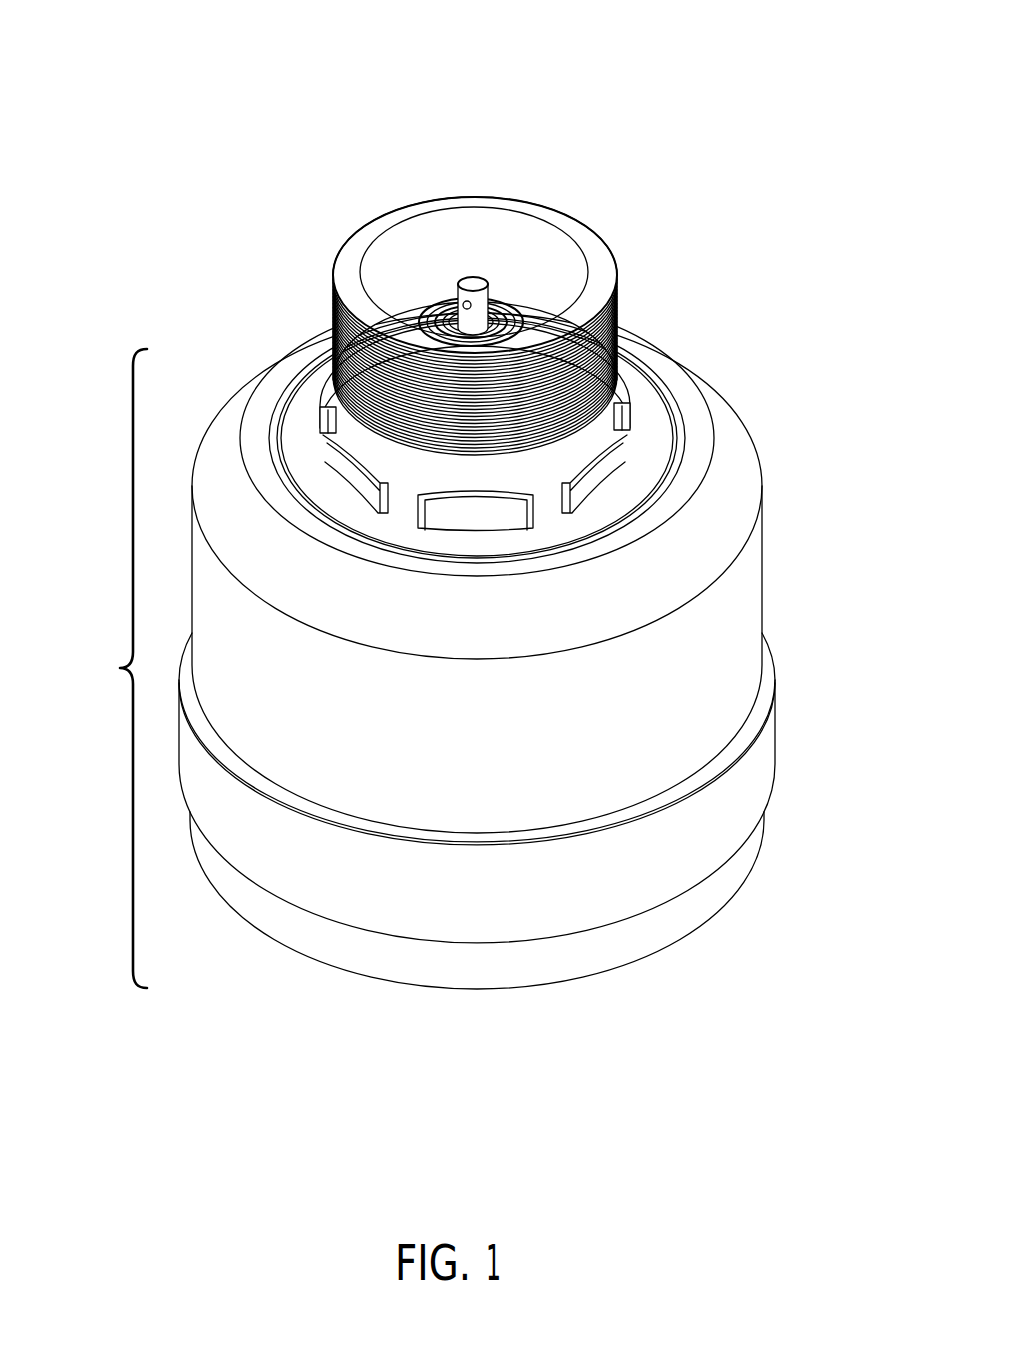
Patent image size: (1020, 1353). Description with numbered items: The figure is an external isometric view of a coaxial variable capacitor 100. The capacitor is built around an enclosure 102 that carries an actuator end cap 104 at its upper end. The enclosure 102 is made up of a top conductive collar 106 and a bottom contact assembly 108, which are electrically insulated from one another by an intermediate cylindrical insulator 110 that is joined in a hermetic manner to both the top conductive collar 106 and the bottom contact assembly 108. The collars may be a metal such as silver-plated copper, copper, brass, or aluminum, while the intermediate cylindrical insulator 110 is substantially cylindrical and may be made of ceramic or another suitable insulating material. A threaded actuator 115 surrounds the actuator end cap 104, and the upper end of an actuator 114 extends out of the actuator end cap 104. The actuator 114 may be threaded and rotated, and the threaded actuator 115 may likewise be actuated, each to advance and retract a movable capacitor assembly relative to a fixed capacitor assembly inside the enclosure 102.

The coaxial variable capacitor 100 is at (676, 86).
The enclosure 102 is at (102, 668).
The actuator end cap 104 is at (515, 308).
The top conductive collar 106 is at (760, 548).
The bottom contact assembly 108 is at (751, 872).
The intermediate cylindrical insulator 110 is at (777, 738).
The actuator 114 is at (474, 280).
The threaded actuator 115 is at (616, 322).